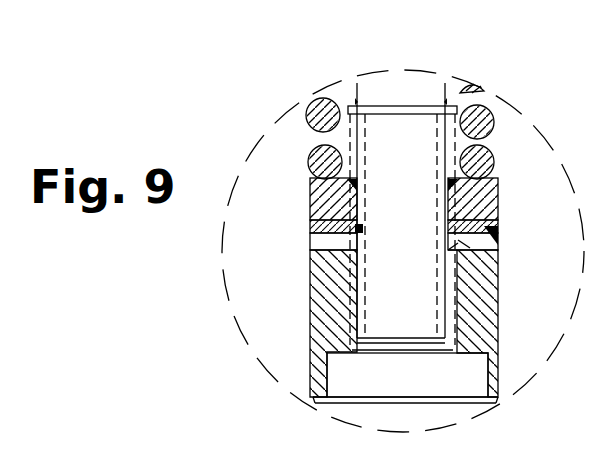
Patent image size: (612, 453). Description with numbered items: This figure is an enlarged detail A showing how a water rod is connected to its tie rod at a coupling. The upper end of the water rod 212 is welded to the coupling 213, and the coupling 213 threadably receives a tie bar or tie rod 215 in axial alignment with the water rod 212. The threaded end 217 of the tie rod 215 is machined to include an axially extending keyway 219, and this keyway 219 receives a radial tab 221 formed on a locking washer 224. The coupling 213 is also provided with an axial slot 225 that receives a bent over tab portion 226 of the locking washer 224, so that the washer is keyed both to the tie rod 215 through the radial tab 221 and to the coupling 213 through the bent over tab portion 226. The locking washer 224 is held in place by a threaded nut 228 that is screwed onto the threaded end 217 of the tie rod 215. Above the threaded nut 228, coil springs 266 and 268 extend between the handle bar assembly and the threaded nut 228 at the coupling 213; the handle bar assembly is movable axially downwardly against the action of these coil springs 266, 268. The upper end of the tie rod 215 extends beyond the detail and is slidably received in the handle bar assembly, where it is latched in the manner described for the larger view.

The enlarged detail A is at (413, 70).
The water rod 212 is at (325, 404).
The coupling 213 is at (504, 323).
The tie rod 215 is at (381, 91).
The threaded end 217 is at (392, 291).
The keyway 219 is at (360, 151).
The radial tab 221 is at (362, 228).
The locking washer 224 is at (327, 224).
The axial slot 225 is at (472, 247).
The bent over tab portion 226 is at (488, 227).
The threaded nut 228 is at (483, 200).
The coil spring 266 is at (306, 115).
The coil spring 268 is at (493, 124).